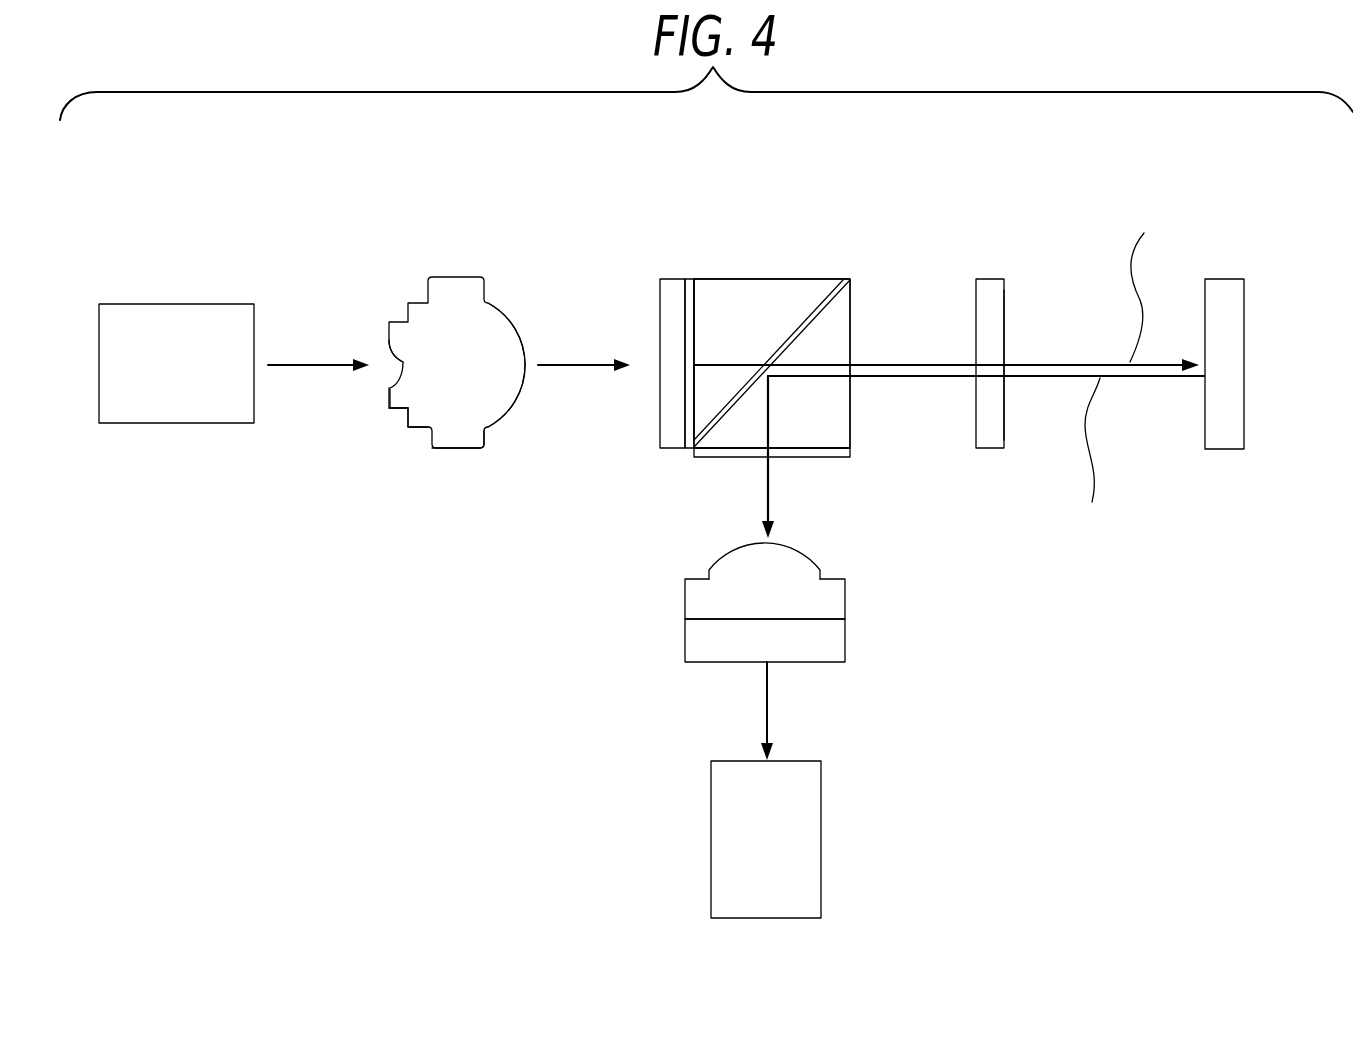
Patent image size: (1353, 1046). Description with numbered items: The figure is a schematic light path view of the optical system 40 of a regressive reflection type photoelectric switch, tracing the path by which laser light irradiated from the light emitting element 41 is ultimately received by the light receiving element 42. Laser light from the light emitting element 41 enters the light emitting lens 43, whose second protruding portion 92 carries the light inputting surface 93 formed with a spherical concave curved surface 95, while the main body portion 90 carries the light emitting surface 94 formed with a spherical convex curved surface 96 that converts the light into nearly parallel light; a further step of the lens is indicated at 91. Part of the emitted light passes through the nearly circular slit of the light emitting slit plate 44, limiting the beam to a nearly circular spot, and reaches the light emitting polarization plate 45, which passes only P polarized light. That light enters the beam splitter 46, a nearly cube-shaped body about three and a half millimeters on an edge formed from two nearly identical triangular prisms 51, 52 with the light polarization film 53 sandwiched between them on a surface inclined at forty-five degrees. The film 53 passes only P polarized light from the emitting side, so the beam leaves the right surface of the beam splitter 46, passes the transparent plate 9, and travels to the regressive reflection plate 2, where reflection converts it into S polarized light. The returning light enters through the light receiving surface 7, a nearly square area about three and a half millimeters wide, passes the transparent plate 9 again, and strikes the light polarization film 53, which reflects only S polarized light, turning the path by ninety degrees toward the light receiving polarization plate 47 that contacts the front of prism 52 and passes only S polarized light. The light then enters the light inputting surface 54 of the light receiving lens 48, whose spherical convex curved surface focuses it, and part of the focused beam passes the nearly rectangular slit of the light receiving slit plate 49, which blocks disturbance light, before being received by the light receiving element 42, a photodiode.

The regressive reflection plate 2 is at (1244, 322).
The light receiving surface 7 is at (1005, 305).
The transparent plate 9 is at (990, 283).
The optical system 40 is at (542, 595).
The light emitting element 41 is at (177, 304).
The light receiving element 42 is at (821, 827).
The light emitting lens 43 is at (448, 381).
The light emitting slit plate 44 is at (670, 282).
The light emitting polarization plate 45 is at (690, 283).
The beam splitter 46 is at (802, 354).
The light receiving polarization plate 47 is at (852, 452).
The light receiving lens 48 is at (843, 598).
The light receiving slit plate 49 is at (843, 643).
The prism 51 is at (750, 282).
The prism 52 is at (845, 310).
The light polarization film 53 is at (733, 417).
The light inputting surface 54 is at (813, 563).
The main body portion 90 is at (460, 448).
The lens step surface 91 is at (422, 427).
The second protruding portion 92 is at (400, 408).
The light inputting surface 93 is at (389, 397).
The light emitting surface 94 is at (490, 433).
The concave curved surface 95 is at (403, 362).
The convex curved surface 96 is at (510, 317).